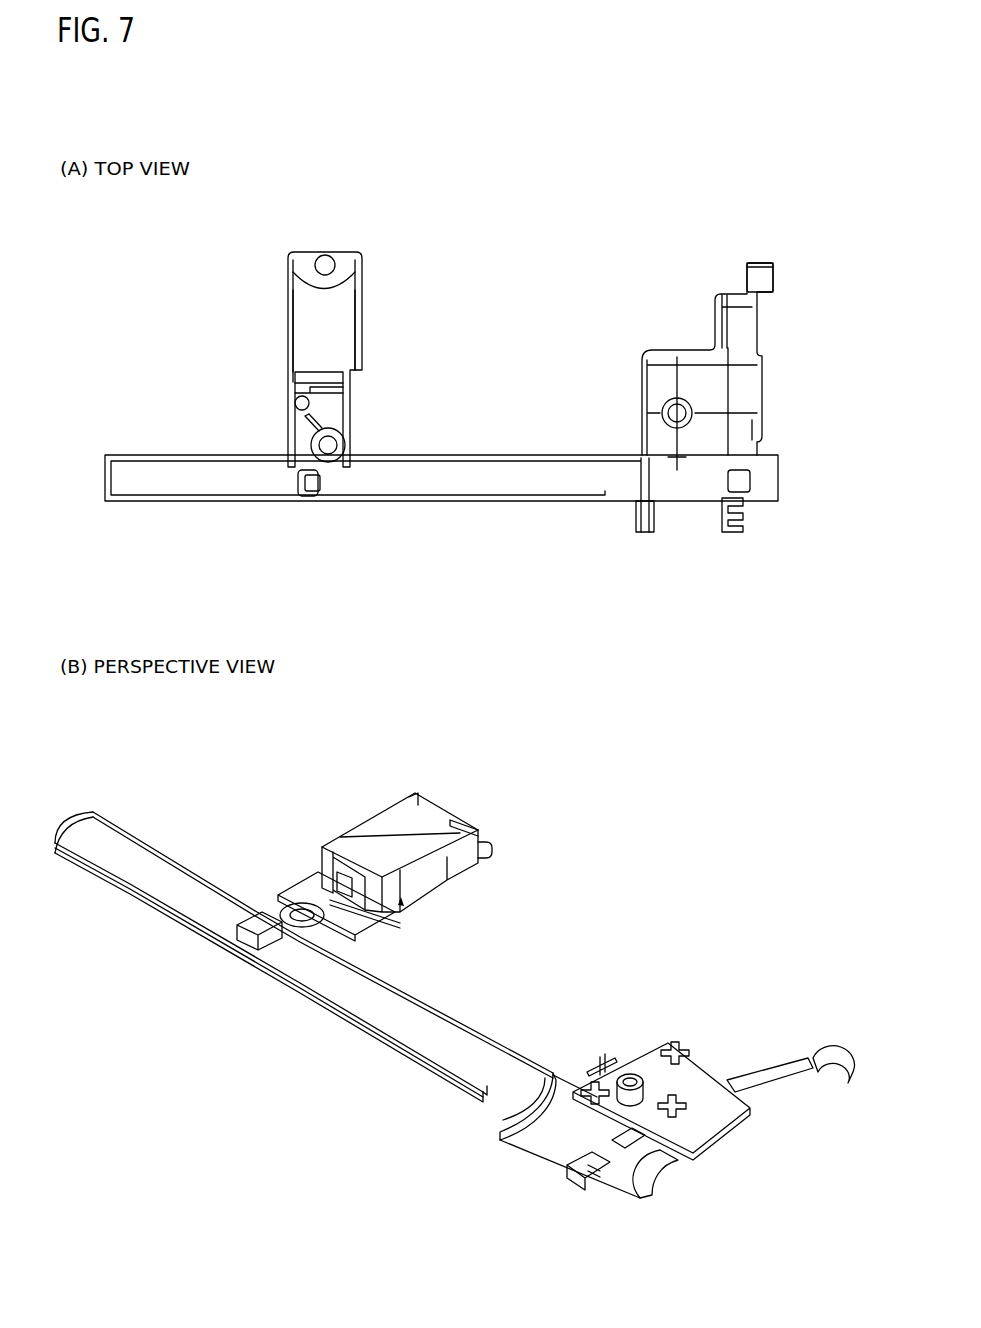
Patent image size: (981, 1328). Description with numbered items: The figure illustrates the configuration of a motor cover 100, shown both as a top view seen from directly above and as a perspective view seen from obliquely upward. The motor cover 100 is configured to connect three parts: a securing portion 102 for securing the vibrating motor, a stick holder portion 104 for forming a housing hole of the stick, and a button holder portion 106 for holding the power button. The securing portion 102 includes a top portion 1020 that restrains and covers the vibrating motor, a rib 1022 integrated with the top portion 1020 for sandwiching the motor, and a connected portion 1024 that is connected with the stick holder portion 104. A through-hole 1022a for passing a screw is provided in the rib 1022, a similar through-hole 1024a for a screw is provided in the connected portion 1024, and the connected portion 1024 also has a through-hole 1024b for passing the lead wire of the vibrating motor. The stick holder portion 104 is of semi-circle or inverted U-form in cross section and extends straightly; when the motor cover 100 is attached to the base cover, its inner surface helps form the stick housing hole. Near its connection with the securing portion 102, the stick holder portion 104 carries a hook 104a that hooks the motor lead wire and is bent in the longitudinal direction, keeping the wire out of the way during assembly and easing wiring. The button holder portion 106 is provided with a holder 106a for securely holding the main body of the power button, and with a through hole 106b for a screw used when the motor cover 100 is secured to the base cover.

The motor cover 100 is at (225, 261).
The securing portion 102 is at (382, 317).
The top portion 1020 is at (303, 331).
The rib 1022 is at (342, 268).
The through-hole 1022a is at (325, 256).
The connected portion 1024 is at (318, 412).
The through-hole 1024a is at (333, 438).
The through-hole 1024b is at (355, 922).
The stick holder portion 104 is at (463, 518).
The hook 104a is at (311, 483).
The button holder portion 106 is at (685, 328).
The holder 106a is at (742, 328).
The through hole 106b is at (676, 412).